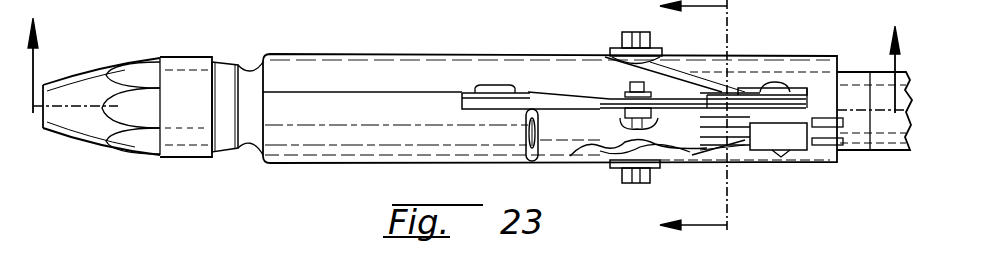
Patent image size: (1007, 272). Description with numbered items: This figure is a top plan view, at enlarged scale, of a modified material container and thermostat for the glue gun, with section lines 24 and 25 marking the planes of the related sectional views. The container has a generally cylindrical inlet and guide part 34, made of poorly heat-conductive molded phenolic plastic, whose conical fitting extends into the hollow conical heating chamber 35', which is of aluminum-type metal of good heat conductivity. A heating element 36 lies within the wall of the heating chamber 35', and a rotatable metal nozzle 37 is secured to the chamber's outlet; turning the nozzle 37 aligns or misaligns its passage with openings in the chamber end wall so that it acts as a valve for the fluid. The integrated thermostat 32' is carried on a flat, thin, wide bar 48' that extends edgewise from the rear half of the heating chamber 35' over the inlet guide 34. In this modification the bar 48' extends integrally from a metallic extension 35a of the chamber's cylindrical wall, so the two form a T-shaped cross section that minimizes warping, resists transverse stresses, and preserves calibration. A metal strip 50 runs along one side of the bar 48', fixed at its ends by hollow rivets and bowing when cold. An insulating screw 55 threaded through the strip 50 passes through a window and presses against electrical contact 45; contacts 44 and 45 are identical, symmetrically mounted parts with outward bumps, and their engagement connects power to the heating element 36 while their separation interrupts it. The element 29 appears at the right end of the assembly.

The section line 24- 24 is at (464, 57).
The section line 25- 25 is at (674, 124).
The nose piece 37 is at (88, 70).
The tubular barrel 35' is at (550, 91).
The mounting bracket 48' is at (531, 66).
The plate 50 is at (560, 97).
The bolt 55 is at (630, 90).
The strap 35a is at (713, 90).
The arm 32' is at (761, 53).
The clip 36 is at (538, 135).
The spring 44 is at (618, 145).
The rod 45 is at (693, 150).
The block 34 is at (822, 157).
The shaft 29 is at (885, 144).